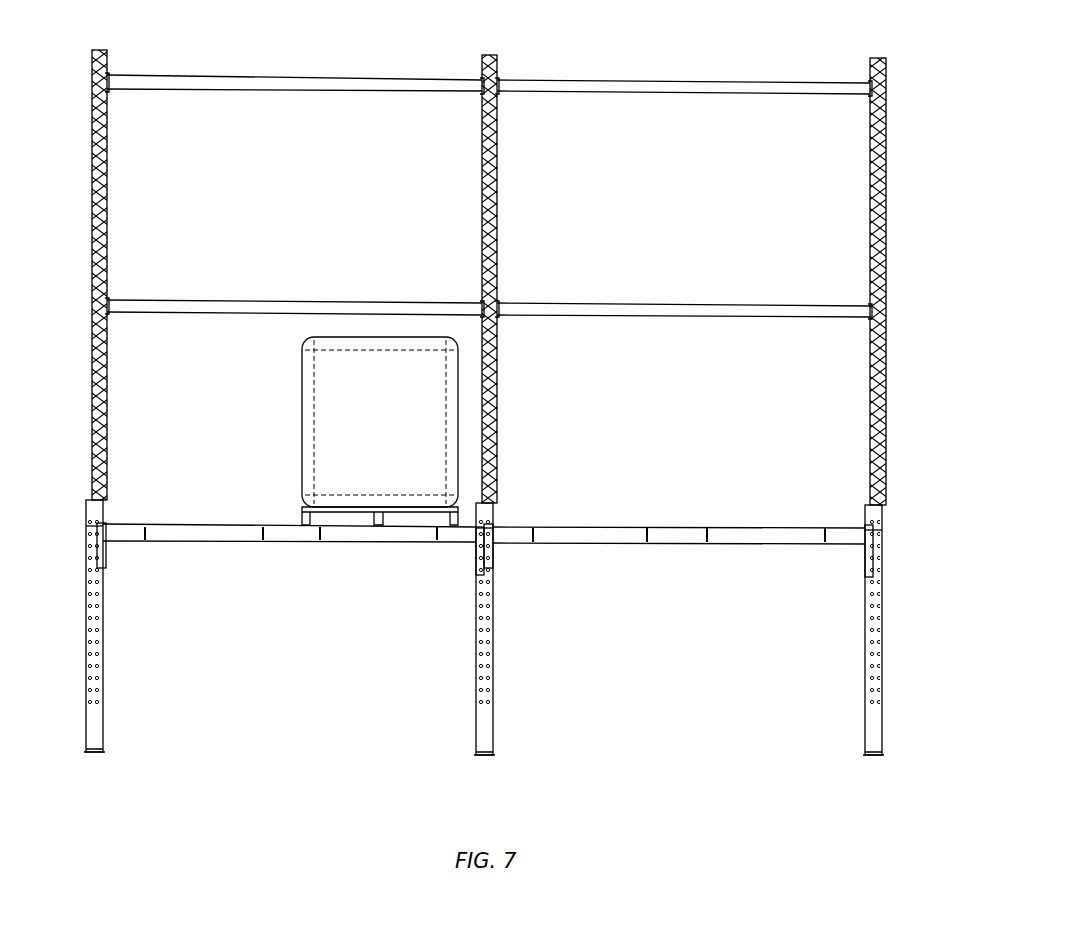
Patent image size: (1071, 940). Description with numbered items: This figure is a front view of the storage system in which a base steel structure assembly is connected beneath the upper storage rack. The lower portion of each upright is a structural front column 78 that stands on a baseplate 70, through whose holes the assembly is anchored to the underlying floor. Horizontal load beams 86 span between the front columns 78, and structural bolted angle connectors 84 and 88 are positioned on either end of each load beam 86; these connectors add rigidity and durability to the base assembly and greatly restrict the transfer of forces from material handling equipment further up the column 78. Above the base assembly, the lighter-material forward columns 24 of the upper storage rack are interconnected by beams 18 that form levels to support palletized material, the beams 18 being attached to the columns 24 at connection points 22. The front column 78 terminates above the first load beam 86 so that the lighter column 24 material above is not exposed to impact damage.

The beam 18 is at (222, 83).
The beam connector 22 is at (92, 80).
The forward column 24 is at (108, 56).
The baseplate 70 is at (103, 753).
The front column 78 is at (88, 640).
The structural bolted angle connector 84 is at (103, 565).
The horizontal load beam 86 is at (172, 534).
The structural bolted angle connector 88 is at (478, 566).